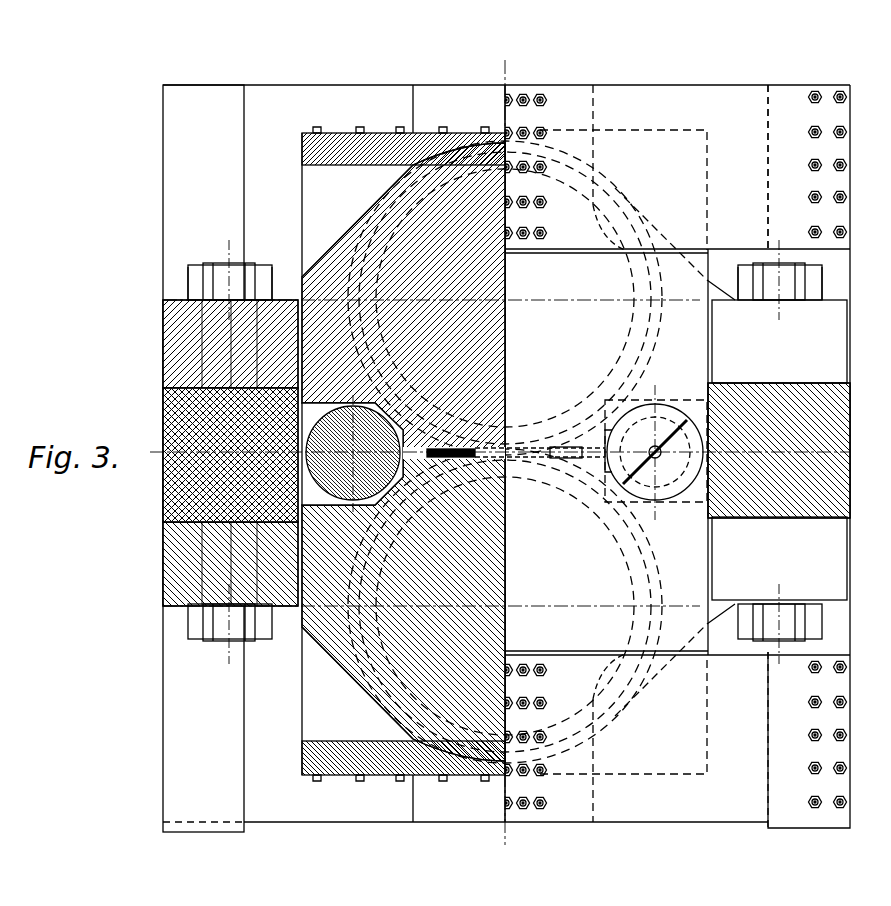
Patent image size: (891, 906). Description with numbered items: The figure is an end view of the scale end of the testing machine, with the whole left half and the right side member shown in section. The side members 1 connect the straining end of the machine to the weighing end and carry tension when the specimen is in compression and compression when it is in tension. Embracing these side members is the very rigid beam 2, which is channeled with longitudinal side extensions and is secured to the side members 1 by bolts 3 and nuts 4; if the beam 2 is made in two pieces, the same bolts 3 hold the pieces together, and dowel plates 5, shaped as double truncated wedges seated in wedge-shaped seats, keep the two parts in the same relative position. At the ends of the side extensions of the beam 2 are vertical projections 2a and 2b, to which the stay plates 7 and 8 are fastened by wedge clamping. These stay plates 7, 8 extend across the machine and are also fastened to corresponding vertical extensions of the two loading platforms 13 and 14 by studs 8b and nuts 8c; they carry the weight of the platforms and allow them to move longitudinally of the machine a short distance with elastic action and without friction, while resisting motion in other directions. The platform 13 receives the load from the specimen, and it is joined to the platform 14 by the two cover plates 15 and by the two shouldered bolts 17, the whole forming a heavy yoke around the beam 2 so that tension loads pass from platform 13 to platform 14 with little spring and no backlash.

The side members 1 is at (162, 410).
The beam 2 is at (162, 358).
The vertical projection 2a is at (767, 107).
The vertical projection 2b is at (245, 107).
The bolts 3 is at (220, 263).
The nuts 4 is at (187, 287).
The dowel plates 5 is at (565, 447).
The stay plates 7 is at (638, 85).
The stay plates 8 is at (333, 85).
The studs 8b is at (547, 100).
The nuts 8c is at (544, 96).
The loading platform 13 is at (594, 151).
The loading platform 14 is at (412, 104).
The cover plates 15 is at (332, 166).
The shouldered bolts 17 is at (335, 490).